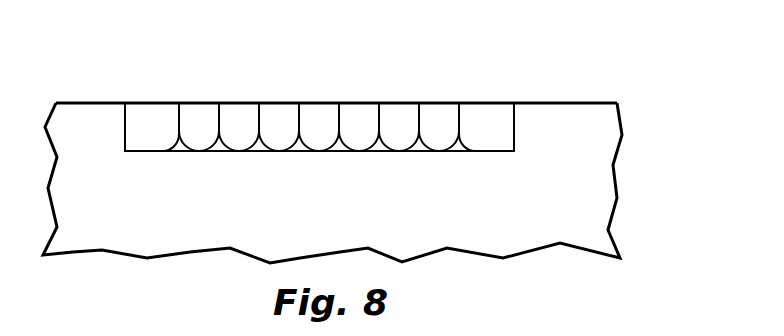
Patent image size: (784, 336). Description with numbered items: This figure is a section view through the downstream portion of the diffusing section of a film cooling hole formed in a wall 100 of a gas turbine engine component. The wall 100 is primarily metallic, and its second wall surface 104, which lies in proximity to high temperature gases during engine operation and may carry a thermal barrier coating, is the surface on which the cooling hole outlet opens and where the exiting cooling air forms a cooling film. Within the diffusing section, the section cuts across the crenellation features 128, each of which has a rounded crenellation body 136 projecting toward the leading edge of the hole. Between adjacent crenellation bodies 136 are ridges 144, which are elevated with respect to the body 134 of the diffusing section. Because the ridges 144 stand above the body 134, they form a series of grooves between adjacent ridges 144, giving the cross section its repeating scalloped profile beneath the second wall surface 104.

The wall 100 is at (648, 188).
The second wall surface 104 is at (587, 103).
The crenellation features 128 is at (175, 156).
The body 134 is at (459, 146).
The crenellation body 136 is at (198, 115).
The ridges 144 is at (332, 136).